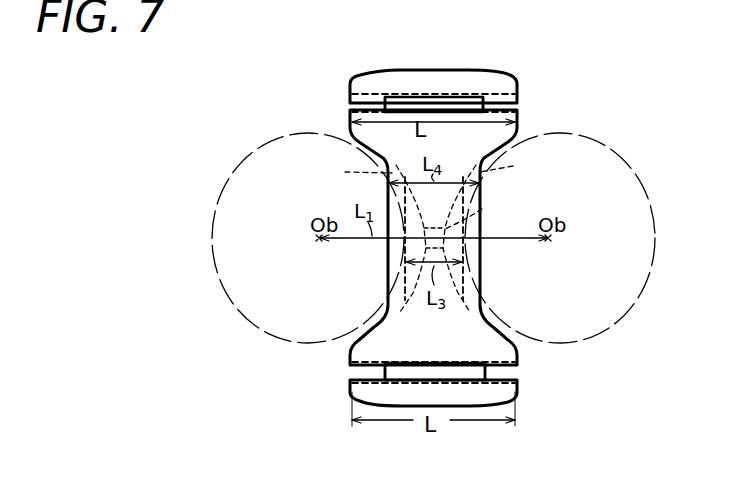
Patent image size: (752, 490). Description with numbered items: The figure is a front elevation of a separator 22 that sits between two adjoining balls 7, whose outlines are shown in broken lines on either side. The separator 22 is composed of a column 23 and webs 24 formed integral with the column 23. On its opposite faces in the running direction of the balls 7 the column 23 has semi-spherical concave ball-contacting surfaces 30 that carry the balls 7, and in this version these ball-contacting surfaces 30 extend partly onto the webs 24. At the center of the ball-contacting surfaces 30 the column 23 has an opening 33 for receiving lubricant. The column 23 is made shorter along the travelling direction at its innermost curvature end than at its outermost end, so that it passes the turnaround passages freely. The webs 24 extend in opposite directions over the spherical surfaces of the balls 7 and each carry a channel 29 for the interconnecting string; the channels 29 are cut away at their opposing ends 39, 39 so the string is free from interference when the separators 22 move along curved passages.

The ball 7 is at (270, 190).
The separator 22 is at (540, 121).
The column 23 is at (482, 209).
The web 24 is at (450, 84).
The channel 29 is at (418, 102).
The ball-contacting surface 30 is at (430, 167).
The opening 33 is at (425, 246).
The opposing end of channel 39 is at (385, 103).